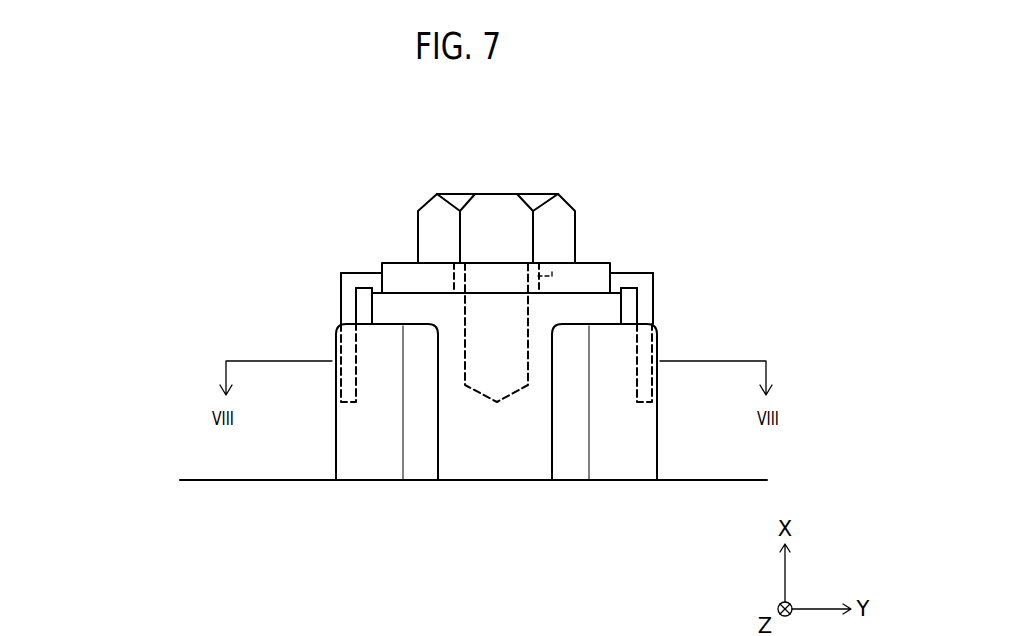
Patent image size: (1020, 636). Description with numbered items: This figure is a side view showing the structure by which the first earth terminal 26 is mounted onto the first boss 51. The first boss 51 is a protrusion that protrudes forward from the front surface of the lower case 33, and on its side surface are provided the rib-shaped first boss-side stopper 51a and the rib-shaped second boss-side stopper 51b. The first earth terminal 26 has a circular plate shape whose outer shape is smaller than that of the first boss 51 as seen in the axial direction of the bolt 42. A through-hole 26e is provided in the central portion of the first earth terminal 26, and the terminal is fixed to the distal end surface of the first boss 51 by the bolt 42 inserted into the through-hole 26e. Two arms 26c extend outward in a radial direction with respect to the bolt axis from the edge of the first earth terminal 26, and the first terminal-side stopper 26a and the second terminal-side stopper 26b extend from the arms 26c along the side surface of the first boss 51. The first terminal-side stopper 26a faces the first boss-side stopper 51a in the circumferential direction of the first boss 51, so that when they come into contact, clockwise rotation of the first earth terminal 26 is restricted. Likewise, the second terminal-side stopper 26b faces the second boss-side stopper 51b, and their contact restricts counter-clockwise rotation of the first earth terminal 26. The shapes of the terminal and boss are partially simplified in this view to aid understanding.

The bolt 42 is at (497, 205).
The first earth terminal 26 is at (405, 267).
The first terminal-side stopper 26a is at (648, 310).
The second terminal-side stopper 26b is at (345, 307).
The arms 26c is at (371, 272).
The through-hole 26e is at (552, 272).
The first boss 51 is at (558, 305).
The first boss-side stopper 51a is at (653, 457).
The second boss-side stopper 51b is at (340, 455).
The lower case 33 is at (422, 450).